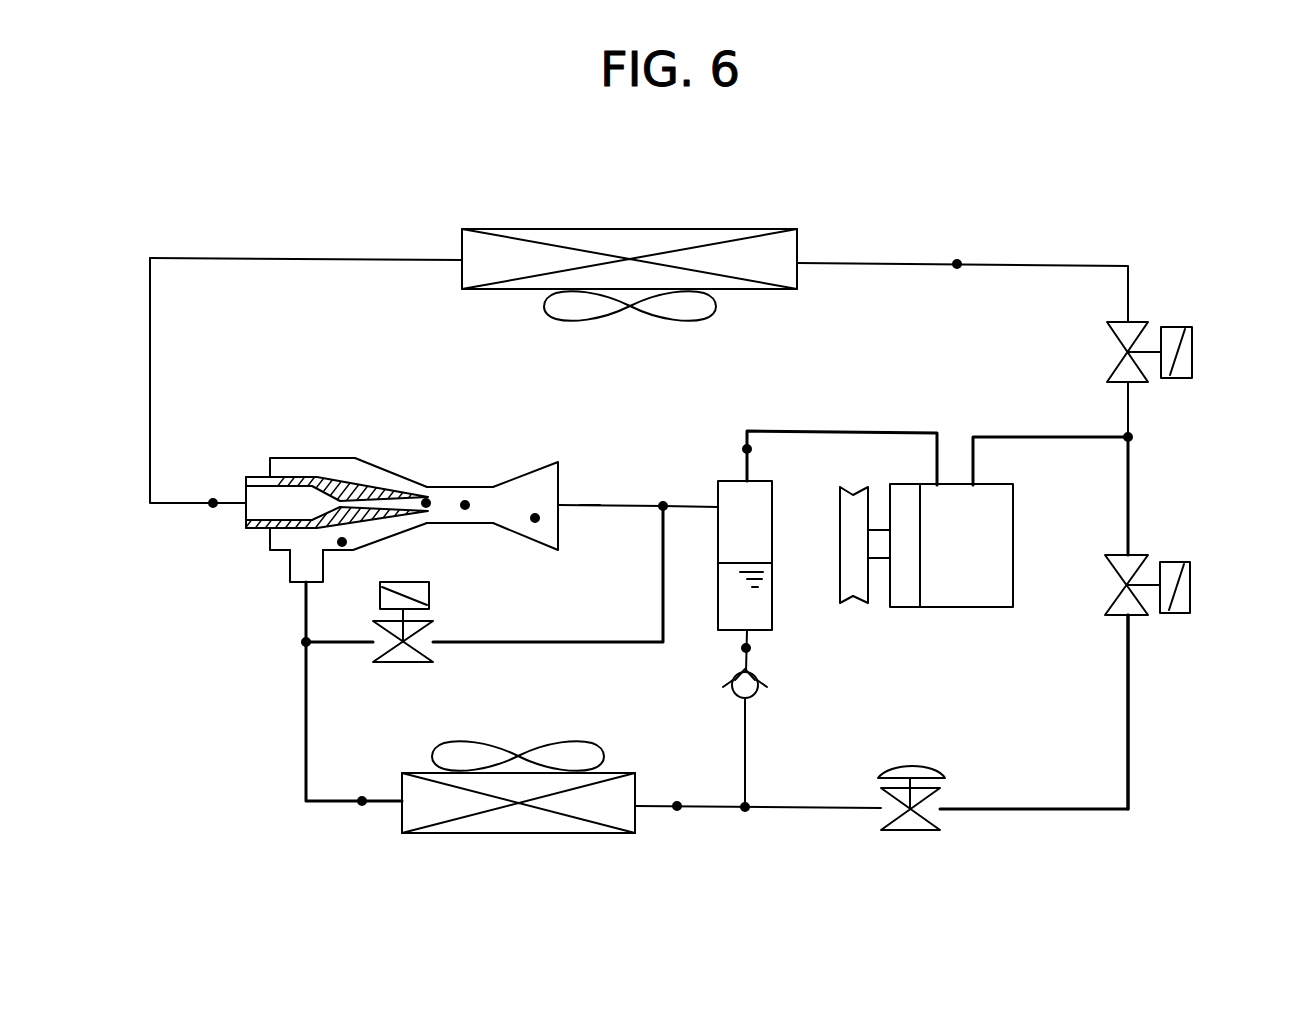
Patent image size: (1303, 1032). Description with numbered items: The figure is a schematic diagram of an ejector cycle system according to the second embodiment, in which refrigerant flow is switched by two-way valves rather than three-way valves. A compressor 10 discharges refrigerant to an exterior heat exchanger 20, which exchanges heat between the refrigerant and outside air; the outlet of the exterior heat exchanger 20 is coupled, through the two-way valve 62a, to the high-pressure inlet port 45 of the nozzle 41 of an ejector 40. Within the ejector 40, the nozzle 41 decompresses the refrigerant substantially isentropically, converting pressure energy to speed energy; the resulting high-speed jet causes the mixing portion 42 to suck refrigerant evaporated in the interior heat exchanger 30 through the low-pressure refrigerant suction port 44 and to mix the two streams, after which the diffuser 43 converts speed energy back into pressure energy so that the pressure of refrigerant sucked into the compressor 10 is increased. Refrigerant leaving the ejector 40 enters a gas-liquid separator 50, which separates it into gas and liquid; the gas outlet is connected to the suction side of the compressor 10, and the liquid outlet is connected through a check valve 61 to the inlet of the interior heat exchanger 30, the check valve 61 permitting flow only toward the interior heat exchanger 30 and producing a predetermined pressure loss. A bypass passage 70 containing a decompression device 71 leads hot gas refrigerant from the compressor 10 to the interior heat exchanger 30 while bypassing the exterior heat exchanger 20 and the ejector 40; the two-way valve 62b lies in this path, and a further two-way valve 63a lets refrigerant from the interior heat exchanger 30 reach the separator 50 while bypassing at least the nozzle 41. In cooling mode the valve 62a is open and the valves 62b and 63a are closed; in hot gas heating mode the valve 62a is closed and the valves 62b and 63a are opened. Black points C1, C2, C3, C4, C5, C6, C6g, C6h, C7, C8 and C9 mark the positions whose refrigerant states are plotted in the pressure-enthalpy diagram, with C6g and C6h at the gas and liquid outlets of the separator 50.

The compressor 10 is at (1015, 507).
The exterior heat exchanger 20 is at (698, 229).
The interior heat exchanger 30 is at (622, 771).
The ejector 40 is at (393, 472).
The nozzle 41 is at (333, 481).
The mixing portion 42 is at (475, 492).
The diffuser 43 is at (540, 461).
The low-pressure refrigerant suction port 44 is at (297, 572).
The high-pressure inlet port 45 is at (244, 497).
The gas-liquid separator 50 is at (775, 497).
The check valve 61 is at (759, 684).
The two-way valve 62a is at (1145, 321).
The two-way valve 62b is at (1145, 555).
The two-way valve 63a is at (433, 653).
The bypass passage 70 is at (1132, 690).
The decompression device 71 is at (942, 799).
The refrigerant state point C1 is at (958, 263).
The refrigerant state point C2 is at (213, 504).
The refrigerant state point C3 is at (426, 504).
The refrigerant state point C4 is at (465, 506).
The refrigerant state point C5 is at (535, 519).
The refrigerant state point C6 is at (588, 506).
The refrigerant state point C6g is at (741, 450).
The refrigerant state point C6h is at (749, 648).
The refrigerant state point C7 is at (678, 803).
The refrigerant state point C8 is at (362, 799).
The refrigerant state point C9 is at (342, 543).